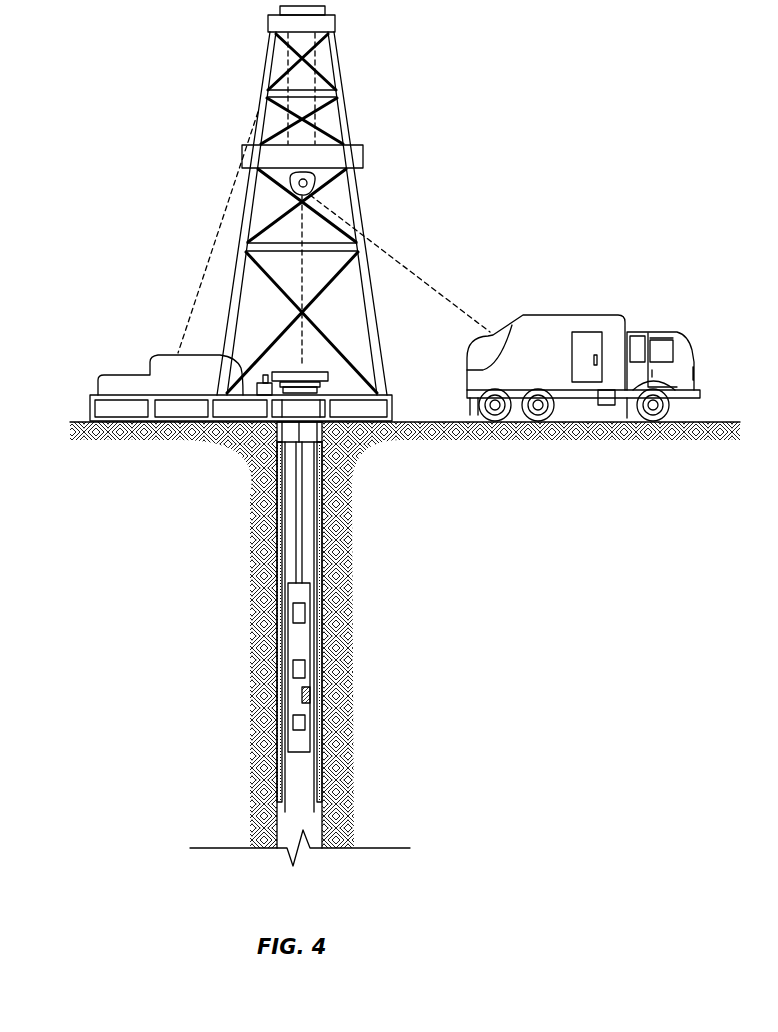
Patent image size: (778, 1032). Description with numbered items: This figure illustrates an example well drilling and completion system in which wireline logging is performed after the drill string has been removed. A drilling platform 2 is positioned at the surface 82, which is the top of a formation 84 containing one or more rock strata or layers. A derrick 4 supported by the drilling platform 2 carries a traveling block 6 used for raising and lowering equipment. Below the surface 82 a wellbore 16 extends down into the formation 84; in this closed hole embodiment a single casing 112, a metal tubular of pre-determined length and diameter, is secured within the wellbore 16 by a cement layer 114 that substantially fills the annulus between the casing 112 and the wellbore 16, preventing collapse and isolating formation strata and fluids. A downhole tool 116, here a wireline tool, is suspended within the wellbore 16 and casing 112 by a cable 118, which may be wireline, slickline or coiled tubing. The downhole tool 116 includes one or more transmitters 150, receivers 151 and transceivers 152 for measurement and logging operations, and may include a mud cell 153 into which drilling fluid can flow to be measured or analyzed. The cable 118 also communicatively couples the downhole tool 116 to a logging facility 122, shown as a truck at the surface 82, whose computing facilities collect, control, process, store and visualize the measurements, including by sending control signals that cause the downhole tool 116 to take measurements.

The drilling platform 2 is at (393, 408).
The derrick 4 is at (335, 67).
The traveling block 6 is at (305, 183).
The wellbore 16 is at (323, 713).
The surface 82 is at (82, 421).
The formation 84 is at (468, 521).
The casing 112 is at (285, 772).
The cement layer 114 is at (276, 790).
The downhole tool 116 is at (315, 748).
The cable 118 is at (300, 453).
The logging facility 122 is at (558, 316).
The transmitter 150 is at (294, 612).
The receiver 151 is at (294, 668).
The transceiver 152 is at (294, 722).
The mud cell 153 is at (309, 694).